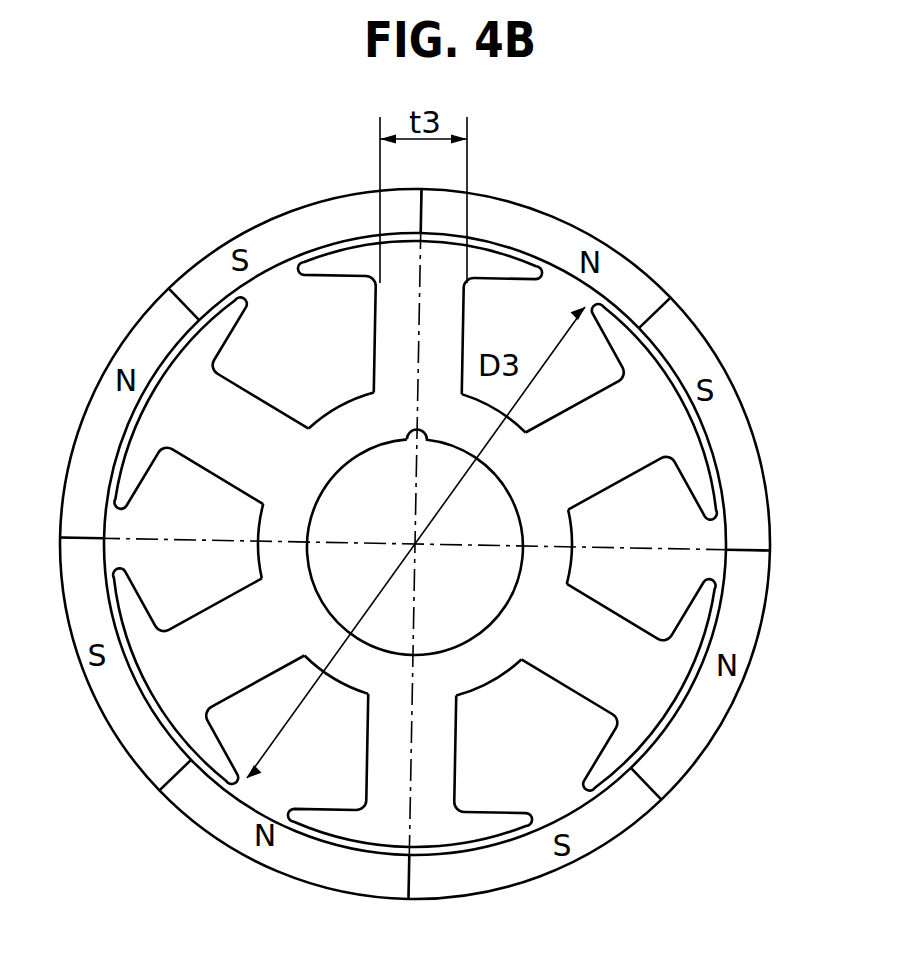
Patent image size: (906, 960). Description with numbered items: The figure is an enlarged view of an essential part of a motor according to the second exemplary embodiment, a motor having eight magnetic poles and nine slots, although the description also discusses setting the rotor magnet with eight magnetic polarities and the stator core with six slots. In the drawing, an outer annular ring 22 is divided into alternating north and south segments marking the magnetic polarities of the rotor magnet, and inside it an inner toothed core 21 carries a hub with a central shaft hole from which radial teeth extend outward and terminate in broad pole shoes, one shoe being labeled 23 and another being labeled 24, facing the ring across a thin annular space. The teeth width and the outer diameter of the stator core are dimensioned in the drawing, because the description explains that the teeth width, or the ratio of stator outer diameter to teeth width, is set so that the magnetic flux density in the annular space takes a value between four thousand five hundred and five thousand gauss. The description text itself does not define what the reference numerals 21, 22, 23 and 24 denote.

The stator core 21 is at (648, 418).
The rotor magnet 22 is at (677, 328).
The pole shoe 23 is at (440, 257).
The salient pole 24 is at (195, 385).